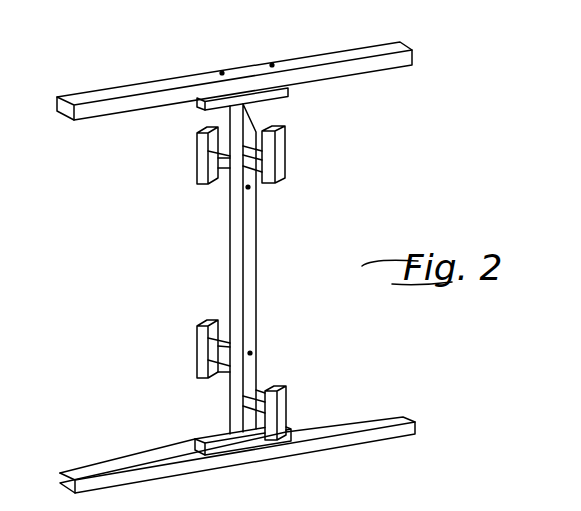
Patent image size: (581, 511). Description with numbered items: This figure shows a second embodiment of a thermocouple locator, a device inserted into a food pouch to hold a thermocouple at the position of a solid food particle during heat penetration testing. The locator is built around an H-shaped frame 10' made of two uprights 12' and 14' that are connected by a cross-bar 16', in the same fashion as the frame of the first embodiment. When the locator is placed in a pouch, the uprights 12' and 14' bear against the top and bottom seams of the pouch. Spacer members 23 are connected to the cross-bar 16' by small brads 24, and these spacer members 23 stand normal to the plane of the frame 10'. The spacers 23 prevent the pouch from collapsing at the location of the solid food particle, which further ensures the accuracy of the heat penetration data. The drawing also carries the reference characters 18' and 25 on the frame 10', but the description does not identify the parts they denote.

The H-shaped frame 10' is at (382, 89).
The upright 12' is at (234, 73).
The upright 14' is at (237, 455).
The cross-bar 16' is at (247, 271).
The fasteners 18' is at (246, 51).
The spacer members 23 is at (196, 177).
The small brads 24 is at (251, 353).
The upper connecting members 25 is at (249, 187).